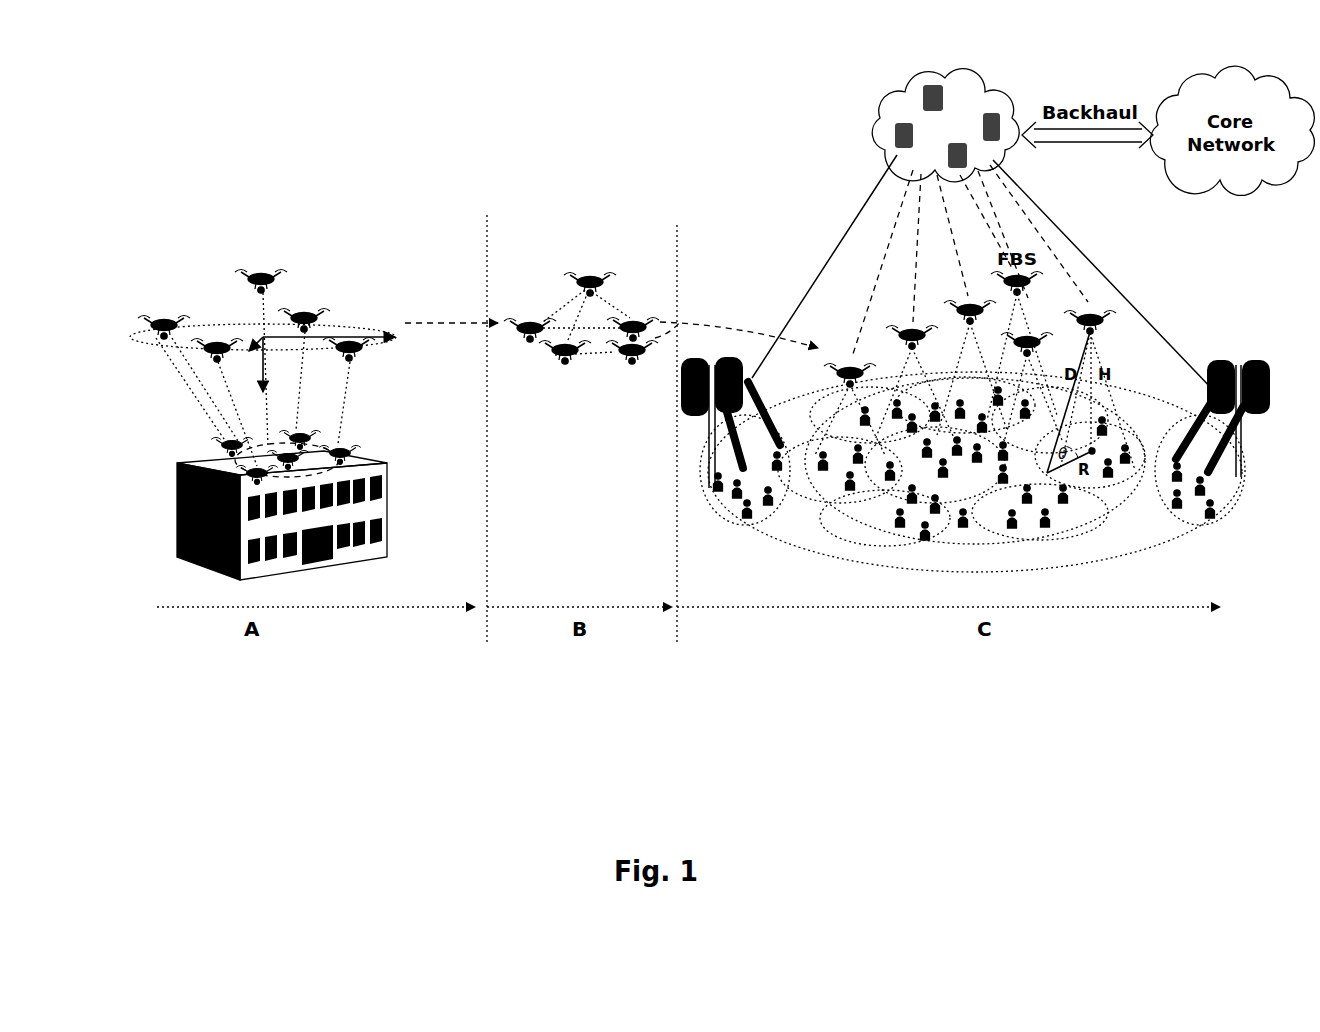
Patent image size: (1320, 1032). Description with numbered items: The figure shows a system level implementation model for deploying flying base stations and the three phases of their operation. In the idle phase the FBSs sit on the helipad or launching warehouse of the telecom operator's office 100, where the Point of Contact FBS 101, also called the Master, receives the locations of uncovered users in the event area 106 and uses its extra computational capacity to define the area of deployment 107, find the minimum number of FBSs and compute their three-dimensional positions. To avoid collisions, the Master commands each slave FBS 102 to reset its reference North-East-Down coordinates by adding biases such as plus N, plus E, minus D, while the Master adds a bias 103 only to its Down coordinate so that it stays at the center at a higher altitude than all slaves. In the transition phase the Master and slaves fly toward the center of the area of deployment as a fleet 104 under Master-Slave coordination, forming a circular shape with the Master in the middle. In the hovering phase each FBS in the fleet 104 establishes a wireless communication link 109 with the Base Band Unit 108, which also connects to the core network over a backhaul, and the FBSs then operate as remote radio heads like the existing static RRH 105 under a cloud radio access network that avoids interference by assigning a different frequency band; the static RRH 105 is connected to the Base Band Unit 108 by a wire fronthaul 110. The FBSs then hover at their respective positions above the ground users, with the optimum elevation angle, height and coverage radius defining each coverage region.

The telecom operator's office 100 is at (210, 518).
The Point of Contact FBS 101 is at (272, 456).
The slave FBS 102 is at (222, 445).
The bias 103 is at (348, 248).
The fleet of FBSs under Master-Slave coordination 104 is at (627, 292).
The static RRH 105 is at (1260, 413).
The event area 106 is at (787, 553).
The area of deployment 107 is at (1125, 508).
The Base Band Unit 108 is at (953, 84).
The wireless communication link 109 is at (1060, 266).
The wire fronthaul 110 is at (1120, 292).